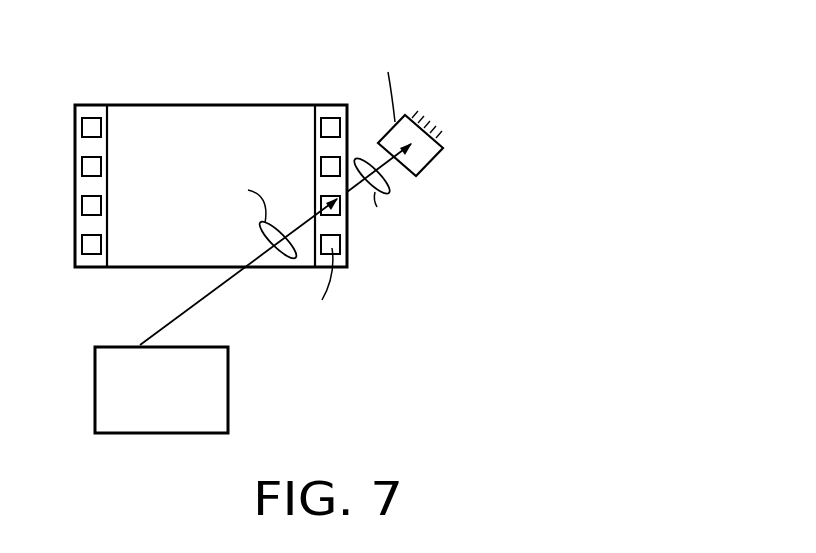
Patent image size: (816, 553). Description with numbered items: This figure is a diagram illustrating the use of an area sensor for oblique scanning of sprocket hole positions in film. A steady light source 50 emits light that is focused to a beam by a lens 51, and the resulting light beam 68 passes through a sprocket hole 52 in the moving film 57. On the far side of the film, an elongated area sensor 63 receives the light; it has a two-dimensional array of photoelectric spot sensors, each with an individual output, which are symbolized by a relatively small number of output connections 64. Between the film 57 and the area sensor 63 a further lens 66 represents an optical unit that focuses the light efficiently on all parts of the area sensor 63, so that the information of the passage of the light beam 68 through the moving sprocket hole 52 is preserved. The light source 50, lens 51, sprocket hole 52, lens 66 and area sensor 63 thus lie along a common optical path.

The light source 50 is at (100, 358).
The lens 51 is at (260, 237).
The sprocket hole 52 is at (341, 218).
The film 57 is at (143, 253).
The area sensor 63 is at (428, 157).
The output connections 64 is at (418, 112).
The lens 66 is at (392, 183).
The light beam 68 is at (310, 222).